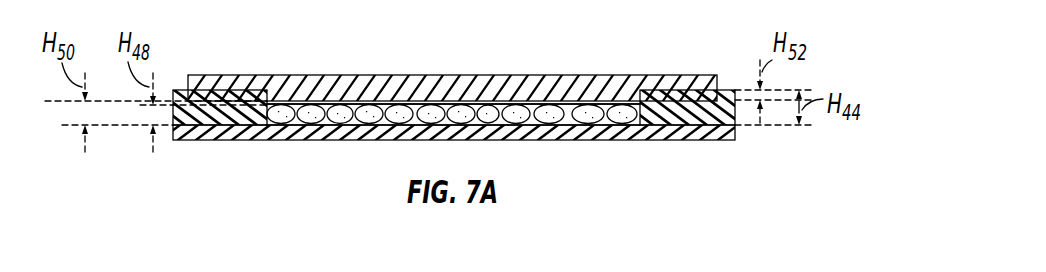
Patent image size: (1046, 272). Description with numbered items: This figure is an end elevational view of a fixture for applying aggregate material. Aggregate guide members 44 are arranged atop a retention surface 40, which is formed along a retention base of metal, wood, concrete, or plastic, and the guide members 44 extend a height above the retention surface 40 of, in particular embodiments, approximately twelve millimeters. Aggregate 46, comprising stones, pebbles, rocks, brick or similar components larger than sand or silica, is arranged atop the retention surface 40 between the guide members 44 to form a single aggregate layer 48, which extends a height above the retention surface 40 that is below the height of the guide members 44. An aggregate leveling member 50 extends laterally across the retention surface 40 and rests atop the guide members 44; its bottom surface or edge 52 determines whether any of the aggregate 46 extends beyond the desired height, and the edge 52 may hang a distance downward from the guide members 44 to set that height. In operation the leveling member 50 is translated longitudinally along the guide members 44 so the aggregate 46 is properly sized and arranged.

The retention surface 40 is at (633, 141).
The aggregate guide members 44 is at (236, 96).
The aggregate 46 is at (590, 107).
The aggregate layer 48 is at (543, 127).
The aggregate leveling member 50 is at (684, 75).
The bottom surface or edge 52 is at (428, 108).